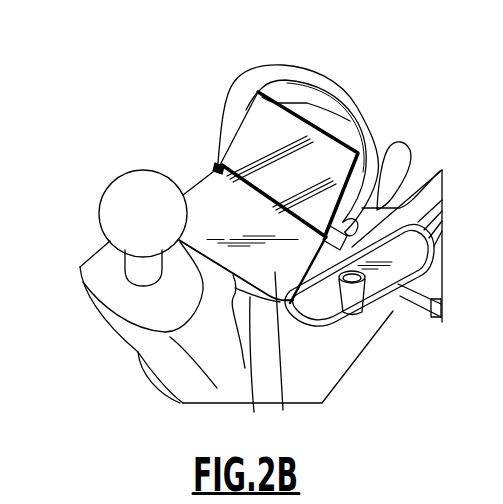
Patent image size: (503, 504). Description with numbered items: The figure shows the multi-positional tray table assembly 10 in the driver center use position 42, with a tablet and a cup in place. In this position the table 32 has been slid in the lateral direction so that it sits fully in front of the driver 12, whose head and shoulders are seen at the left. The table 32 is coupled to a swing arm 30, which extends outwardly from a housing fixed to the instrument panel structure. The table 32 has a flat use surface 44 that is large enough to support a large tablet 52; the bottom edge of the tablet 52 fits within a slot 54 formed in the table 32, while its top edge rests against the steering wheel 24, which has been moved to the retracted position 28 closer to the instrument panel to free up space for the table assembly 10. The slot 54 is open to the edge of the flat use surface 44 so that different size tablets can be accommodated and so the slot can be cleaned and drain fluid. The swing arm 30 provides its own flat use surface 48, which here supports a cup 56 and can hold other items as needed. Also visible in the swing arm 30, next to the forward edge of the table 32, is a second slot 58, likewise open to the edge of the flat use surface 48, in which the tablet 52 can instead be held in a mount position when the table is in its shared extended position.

The multi-positional tray table assembly 10 is at (326, 338).
The driver 12 is at (130, 190).
The steering wheel 24 is at (309, 79).
The retracted/stowed position 28 is at (278, 58).
The swing arm 30 is at (392, 256).
The table 32 is at (249, 405).
The driver center use position 42 is at (189, 156).
The flat use surface 44 is at (283, 410).
The flat use surface 48 is at (397, 296).
The tablet 52 is at (256, 143).
The slot 54 is at (218, 162).
The cup 56 is at (362, 313).
The slot 58 is at (385, 205).